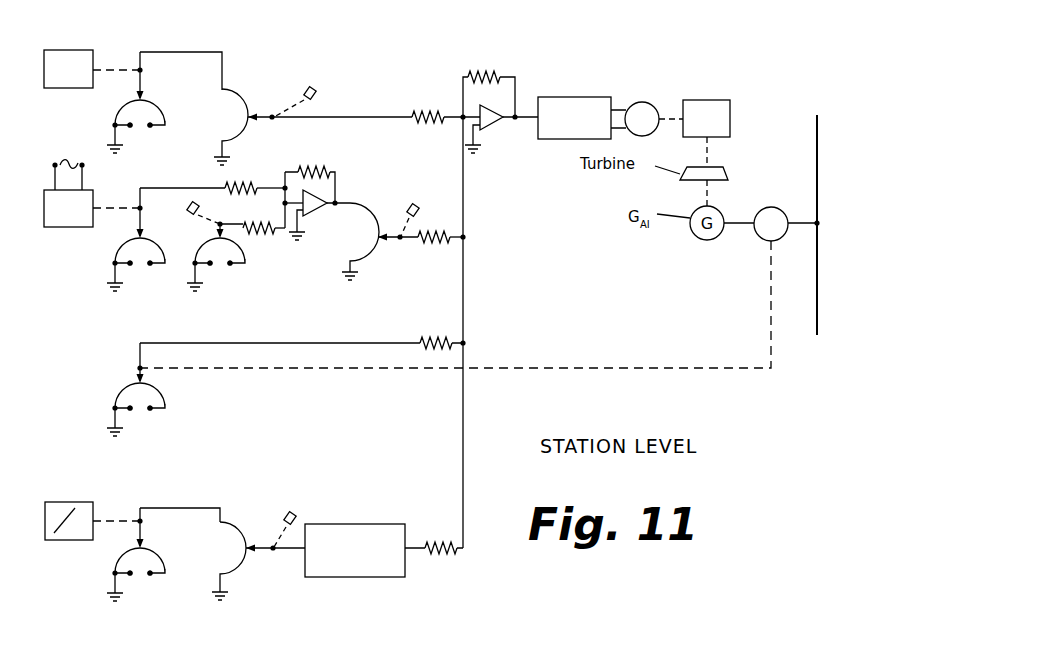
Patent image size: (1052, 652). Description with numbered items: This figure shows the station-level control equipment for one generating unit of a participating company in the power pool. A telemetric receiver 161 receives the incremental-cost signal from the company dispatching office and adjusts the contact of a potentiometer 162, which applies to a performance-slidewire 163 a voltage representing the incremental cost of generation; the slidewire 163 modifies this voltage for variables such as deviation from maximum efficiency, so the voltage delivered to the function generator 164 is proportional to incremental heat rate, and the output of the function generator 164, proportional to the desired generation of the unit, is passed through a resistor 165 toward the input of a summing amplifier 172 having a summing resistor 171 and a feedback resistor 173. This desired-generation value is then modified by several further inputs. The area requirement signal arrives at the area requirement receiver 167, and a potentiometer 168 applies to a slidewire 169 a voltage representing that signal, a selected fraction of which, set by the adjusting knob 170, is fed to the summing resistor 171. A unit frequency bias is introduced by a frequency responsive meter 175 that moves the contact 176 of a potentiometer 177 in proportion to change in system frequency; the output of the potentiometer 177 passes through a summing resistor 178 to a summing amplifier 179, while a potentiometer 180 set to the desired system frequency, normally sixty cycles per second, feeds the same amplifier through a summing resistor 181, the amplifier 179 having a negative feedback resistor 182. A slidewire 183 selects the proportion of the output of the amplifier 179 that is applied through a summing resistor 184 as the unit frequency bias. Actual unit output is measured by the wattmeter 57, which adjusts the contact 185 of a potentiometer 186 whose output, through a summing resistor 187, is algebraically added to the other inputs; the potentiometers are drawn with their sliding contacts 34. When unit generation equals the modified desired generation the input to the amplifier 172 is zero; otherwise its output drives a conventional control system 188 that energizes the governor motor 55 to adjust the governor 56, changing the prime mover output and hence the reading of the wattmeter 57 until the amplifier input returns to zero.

The contact switch 34 is at (140, 133).
The governor motor 55 is at (641, 102).
The governor 56 is at (711, 99).
The wattmeter 57 is at (770, 206).
The telemetric receiver 161 is at (85, 505).
The potentiometer 162 is at (148, 553).
The performance-slidewire 163 is at (236, 535).
The function generator 164 is at (362, 522).
The resistor 165 is at (442, 540).
The area requirement receiver 167 is at (68, 46).
The potentiometer 168 is at (151, 108).
The slidewire 169 is at (232, 92).
The potentiometer 170 is at (268, 113).
The summing resistor 171 is at (428, 107).
The summing amplifier 172 is at (489, 127).
The feedback resistor 173 is at (490, 70).
The frequency responsive meter 175 is at (57, 229).
The contact 176 is at (142, 222).
The potentiometer 177 is at (123, 247).
The summing resistor 178 is at (238, 178).
The summing amplifier 179 is at (311, 214).
The potentiometer 180 is at (205, 246).
The summing resistor 181 is at (259, 233).
The negative feedback resistor 182 is at (312, 170).
The slidewire 183 is at (363, 210).
The summing resistor 184 is at (446, 246).
The contact 185 is at (135, 372).
The potentiometer 186 is at (120, 393).
The summing resistor 187 is at (438, 340).
The control system 188 is at (571, 98).